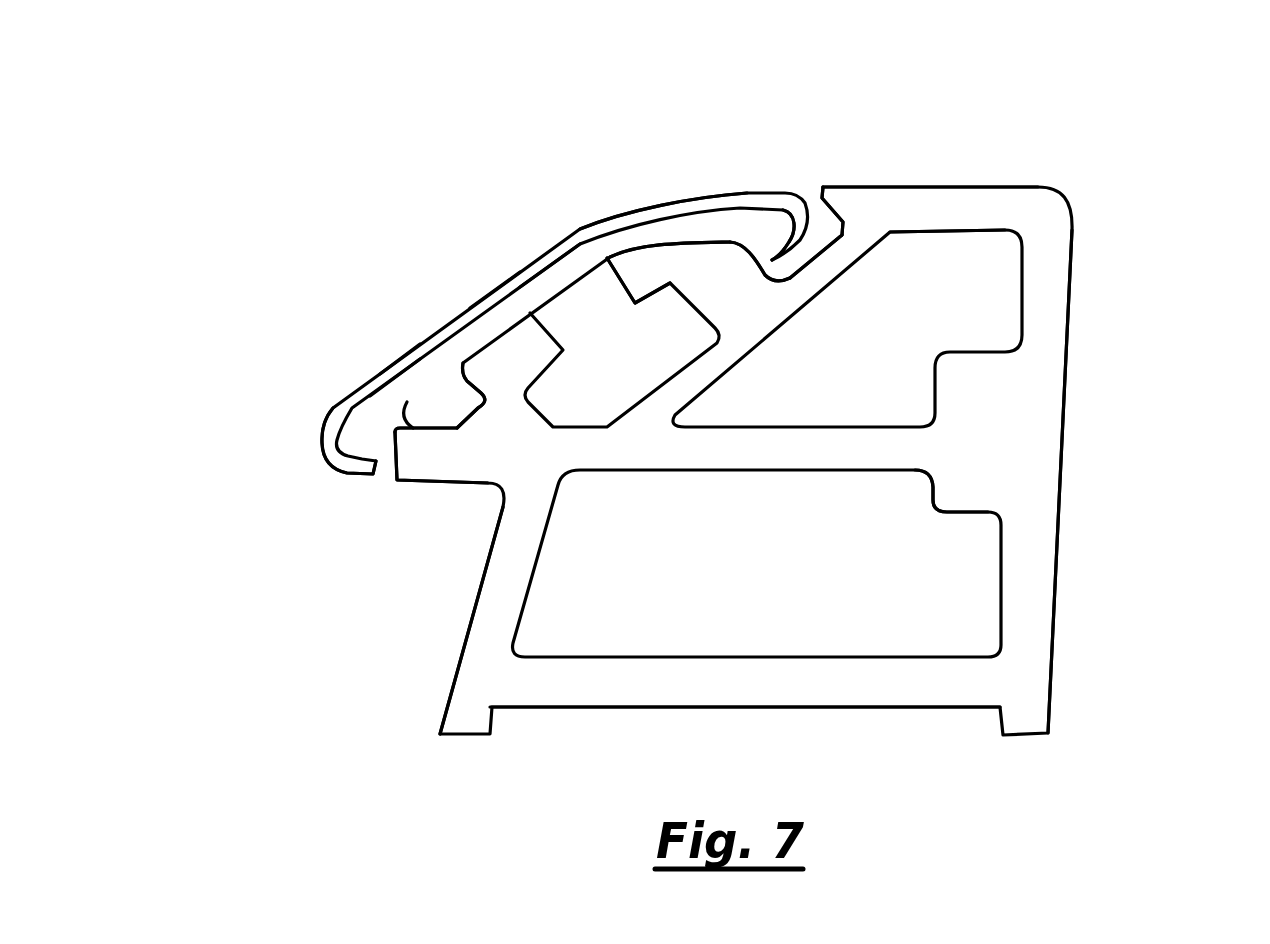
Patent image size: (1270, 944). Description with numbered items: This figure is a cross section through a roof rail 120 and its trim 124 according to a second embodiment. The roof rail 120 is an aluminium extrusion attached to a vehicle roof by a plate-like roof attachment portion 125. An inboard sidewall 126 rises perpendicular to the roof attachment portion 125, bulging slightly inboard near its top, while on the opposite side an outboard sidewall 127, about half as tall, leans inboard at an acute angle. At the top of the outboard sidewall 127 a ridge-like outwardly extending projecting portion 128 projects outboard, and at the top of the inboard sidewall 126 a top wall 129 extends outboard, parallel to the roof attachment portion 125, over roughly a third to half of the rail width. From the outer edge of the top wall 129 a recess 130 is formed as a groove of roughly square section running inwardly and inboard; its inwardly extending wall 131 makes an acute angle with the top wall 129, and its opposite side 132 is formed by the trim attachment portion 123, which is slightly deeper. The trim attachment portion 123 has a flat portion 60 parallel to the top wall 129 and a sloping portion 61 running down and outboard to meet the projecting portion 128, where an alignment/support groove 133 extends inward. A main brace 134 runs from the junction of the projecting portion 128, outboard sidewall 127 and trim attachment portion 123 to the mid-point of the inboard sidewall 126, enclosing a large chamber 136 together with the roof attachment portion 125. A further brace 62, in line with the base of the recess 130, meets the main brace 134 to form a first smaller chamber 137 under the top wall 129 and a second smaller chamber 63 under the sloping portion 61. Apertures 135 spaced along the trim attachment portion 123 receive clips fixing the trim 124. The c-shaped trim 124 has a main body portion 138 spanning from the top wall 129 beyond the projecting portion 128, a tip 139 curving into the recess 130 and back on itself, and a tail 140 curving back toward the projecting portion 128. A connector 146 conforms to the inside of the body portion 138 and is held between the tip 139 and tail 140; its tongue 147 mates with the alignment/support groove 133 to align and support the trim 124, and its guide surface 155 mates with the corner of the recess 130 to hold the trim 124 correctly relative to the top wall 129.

The flat portion 60 is at (652, 268).
The sloping portion 61 is at (524, 322).
The further brace 62 is at (566, 250).
The second smaller chamber 63 is at (622, 342).
The roof rail 120 is at (997, 418).
The trim attachment portion 123 is at (634, 262).
The trim 124 is at (424, 348).
The roof attachment portion 125 is at (750, 690).
The inboard sidewall 126 is at (1030, 492).
The outboard sidewall 127 is at (487, 608).
The outwardly extending projecting portion 128 is at (443, 474).
The top wall 129 is at (975, 203).
The recess 130 is at (878, 188).
The inwardly extending wall 131 is at (832, 256).
The opposite side of the groove 132 is at (752, 283).
The alignment/support groove 133 is at (394, 426).
The main brace 134 is at (857, 455).
The apertures 135 is at (693, 360).
The large chamber 136 is at (920, 613).
The first smaller chamber 137 is at (847, 328).
The main body portion 138 is at (389, 385).
The tip 139 is at (822, 198).
The tail 140 is at (321, 444).
The connector 146 is at (466, 308).
The tongue 147 is at (390, 380).
The guide surface 155 is at (737, 240).